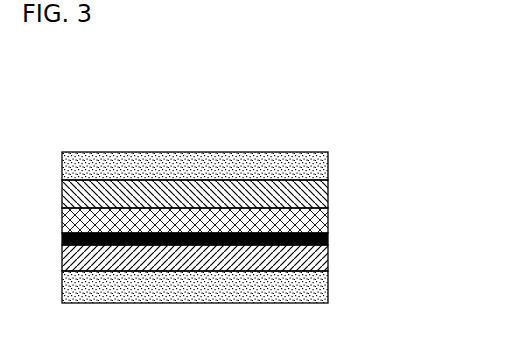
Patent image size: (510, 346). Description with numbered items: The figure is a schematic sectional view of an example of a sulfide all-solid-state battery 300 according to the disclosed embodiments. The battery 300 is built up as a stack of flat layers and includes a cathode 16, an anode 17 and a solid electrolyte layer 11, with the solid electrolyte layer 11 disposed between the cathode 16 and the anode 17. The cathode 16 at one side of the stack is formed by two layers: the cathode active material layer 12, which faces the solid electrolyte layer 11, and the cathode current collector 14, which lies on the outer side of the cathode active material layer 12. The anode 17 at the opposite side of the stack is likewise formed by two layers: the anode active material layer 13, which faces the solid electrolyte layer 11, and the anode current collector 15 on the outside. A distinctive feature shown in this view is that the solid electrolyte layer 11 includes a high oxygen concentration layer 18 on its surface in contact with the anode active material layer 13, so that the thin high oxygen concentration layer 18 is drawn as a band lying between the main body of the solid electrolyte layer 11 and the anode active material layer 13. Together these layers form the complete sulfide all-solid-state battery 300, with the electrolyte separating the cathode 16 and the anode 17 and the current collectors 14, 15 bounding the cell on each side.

The sulfide all-solid-state battery 300 is at (56, 103).
The solid electrolyte layer 11 is at (328, 219).
The cathode active material layer 12 is at (225, 194).
The anode active material layer 13 is at (328, 257).
The cathode current collector 14 is at (328, 168).
The anode current collector 15 is at (388, 259).
The cathode 16 is at (251, 178).
The anode 17 is at (251, 274).
The high oxygen concentration layer 18 is at (328, 238).